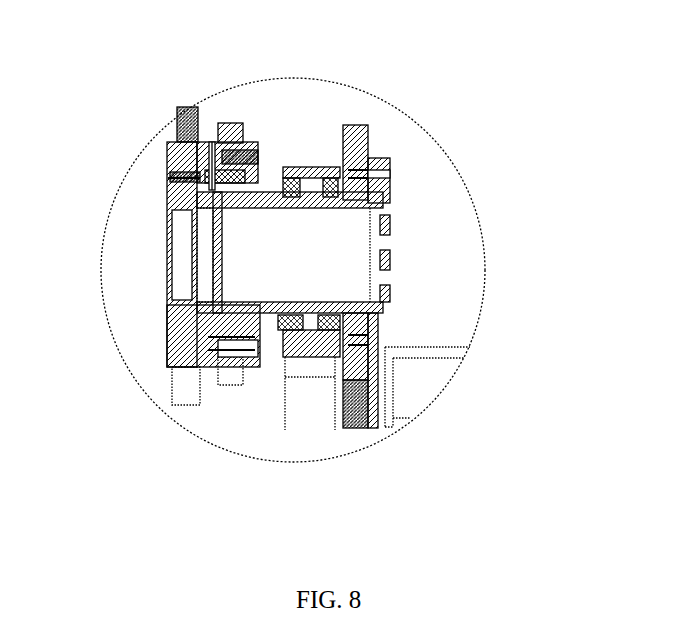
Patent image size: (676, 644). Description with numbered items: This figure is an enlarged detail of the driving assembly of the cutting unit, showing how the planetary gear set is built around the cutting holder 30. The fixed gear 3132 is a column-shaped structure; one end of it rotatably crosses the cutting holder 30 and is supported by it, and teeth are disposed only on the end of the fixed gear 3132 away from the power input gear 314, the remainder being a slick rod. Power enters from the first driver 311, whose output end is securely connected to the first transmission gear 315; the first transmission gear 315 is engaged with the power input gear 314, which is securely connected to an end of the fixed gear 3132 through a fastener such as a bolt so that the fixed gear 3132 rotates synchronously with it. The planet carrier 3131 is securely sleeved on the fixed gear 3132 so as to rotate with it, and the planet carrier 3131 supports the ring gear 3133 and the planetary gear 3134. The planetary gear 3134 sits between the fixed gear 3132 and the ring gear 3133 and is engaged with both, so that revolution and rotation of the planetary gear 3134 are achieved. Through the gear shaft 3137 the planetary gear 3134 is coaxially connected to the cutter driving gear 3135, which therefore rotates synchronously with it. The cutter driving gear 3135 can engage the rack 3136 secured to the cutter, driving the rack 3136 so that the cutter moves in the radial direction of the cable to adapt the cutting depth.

The planet carrier 3131 is at (212, 357).
The fixed gear 3132 is at (275, 310).
The ring gear 3133 is at (237, 137).
The planetary gear 3134 is at (240, 153).
The cutter driving gear 3135 is at (187, 177).
The rack 3136 is at (180, 120).
The gear shaft 3137 is at (212, 167).
The power input gear 314 is at (357, 150).
The first transmission gear 315 is at (367, 428).
The first driver 311 is at (420, 383).
The cutting holder 30 is at (310, 415).